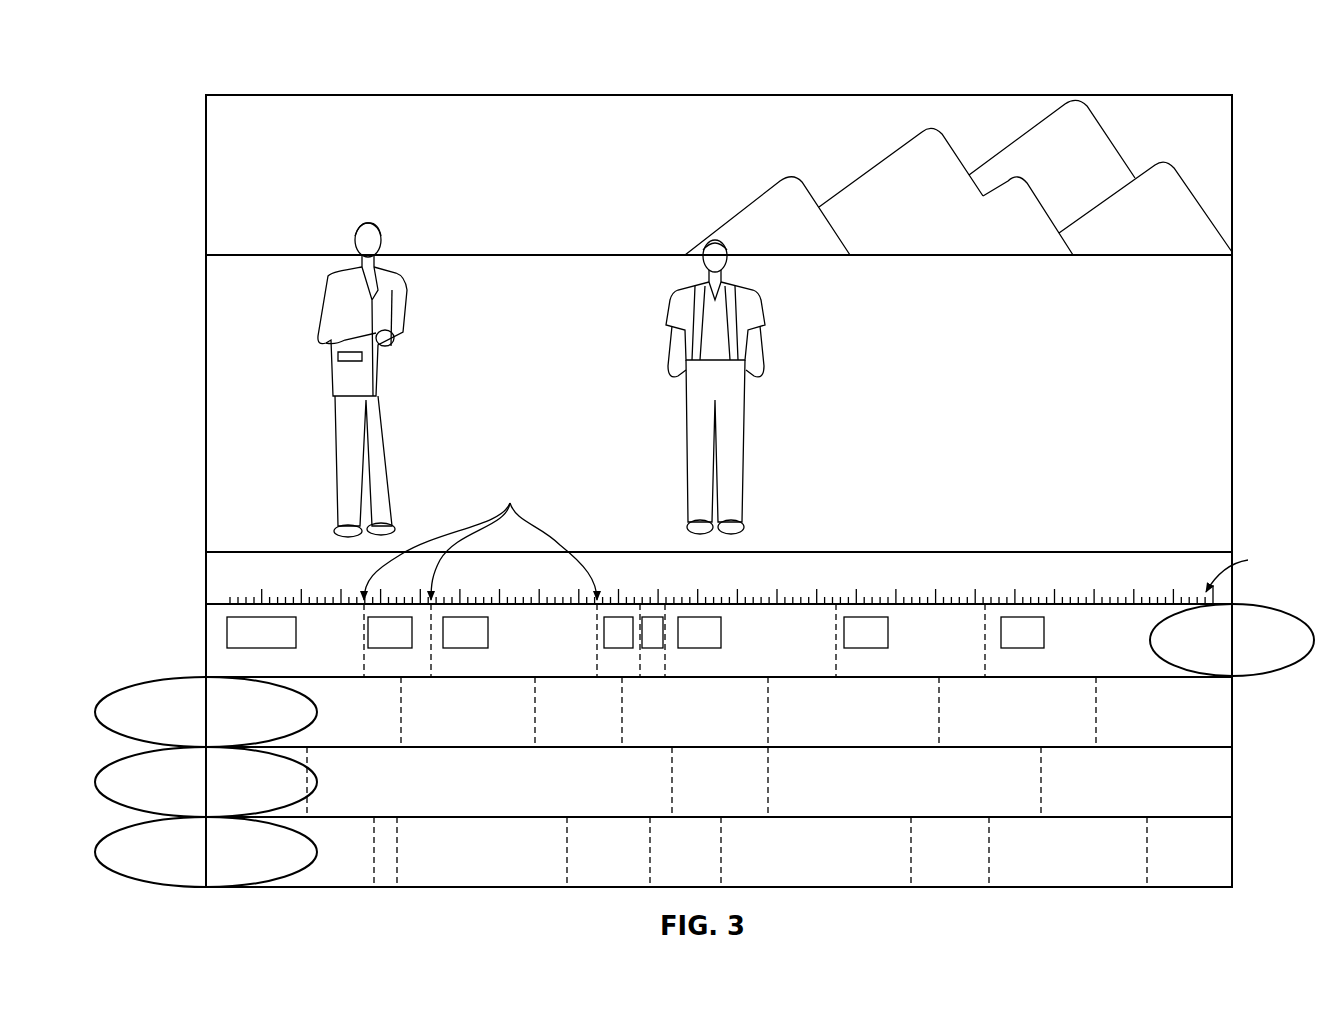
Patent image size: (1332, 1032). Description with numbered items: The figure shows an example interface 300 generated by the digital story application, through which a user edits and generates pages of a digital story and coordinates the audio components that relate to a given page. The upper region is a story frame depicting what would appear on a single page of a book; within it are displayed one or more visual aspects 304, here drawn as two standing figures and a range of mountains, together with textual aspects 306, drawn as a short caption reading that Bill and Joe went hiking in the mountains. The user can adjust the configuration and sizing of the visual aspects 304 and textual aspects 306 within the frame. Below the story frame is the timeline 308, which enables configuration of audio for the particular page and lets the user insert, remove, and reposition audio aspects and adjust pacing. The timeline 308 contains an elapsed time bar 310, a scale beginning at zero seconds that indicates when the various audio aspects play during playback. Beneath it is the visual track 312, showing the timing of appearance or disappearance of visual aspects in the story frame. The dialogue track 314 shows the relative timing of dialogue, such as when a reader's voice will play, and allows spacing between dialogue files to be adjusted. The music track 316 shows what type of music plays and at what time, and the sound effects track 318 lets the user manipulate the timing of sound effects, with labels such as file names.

The interface 300 is at (144, 54).
The visual aspects 304 is at (1018, 135).
The textual aspects 306 is at (1059, 427).
The timeline 308 is at (225, 540).
The elapsed time bar 310 is at (206, 578).
The visual track 312 is at (206, 638).
The dialogue track 314 is at (123, 688).
The music track 316 is at (123, 758).
The sound effects track 318 is at (123, 828).